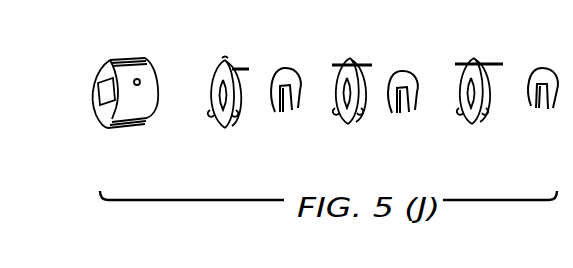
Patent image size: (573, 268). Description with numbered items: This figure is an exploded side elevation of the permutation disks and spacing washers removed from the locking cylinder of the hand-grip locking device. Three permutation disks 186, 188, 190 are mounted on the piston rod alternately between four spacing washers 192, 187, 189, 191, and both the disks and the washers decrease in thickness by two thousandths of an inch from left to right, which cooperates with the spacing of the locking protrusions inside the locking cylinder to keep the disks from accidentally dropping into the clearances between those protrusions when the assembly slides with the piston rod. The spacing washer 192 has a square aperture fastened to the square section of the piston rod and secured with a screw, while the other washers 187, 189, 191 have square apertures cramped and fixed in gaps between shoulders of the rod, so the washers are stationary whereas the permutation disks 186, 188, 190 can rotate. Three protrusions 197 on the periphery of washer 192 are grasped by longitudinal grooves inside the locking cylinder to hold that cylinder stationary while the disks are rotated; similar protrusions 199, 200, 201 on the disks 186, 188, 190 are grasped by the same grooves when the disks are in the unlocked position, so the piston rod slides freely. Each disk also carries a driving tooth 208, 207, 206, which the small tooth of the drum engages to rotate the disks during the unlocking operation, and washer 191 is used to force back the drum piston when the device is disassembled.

The protrusions 197 is at (96, 112).
The spacing washer 192 is at (98, 113).
The protrusion 199 is at (222, 62).
The driving tooth 208 is at (234, 68).
The permutation disk 186 is at (225, 129).
The spacing washer 187 is at (295, 116).
The protrusion 200 is at (349, 58).
The driving tooth 207 is at (372, 65).
The permutation disk 188 is at (346, 125).
The spacing washer 189 is at (408, 118).
The protrusion 201 is at (474, 58).
The driving tooth 206 is at (512, 54).
The permutation disk 190 is at (471, 125).
The spacing washer 191 is at (547, 114).